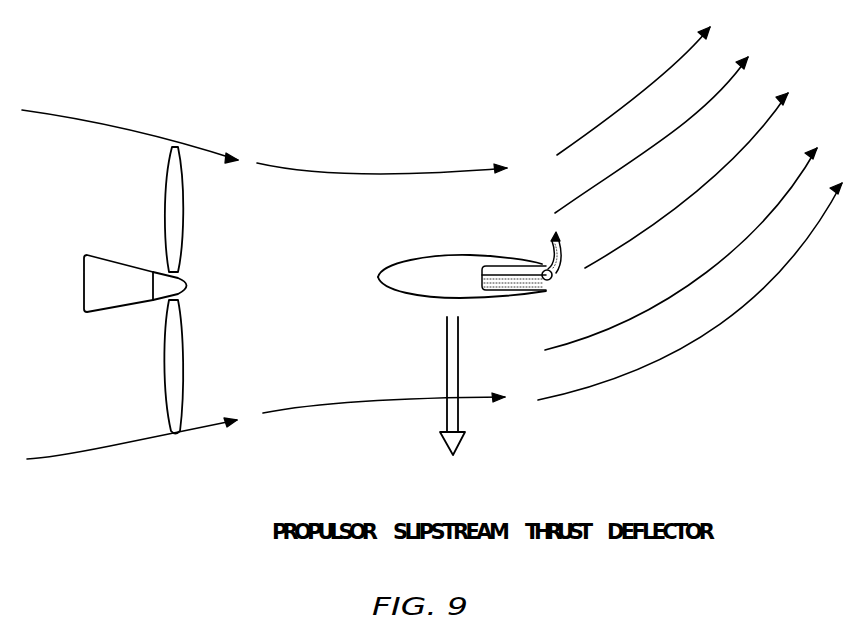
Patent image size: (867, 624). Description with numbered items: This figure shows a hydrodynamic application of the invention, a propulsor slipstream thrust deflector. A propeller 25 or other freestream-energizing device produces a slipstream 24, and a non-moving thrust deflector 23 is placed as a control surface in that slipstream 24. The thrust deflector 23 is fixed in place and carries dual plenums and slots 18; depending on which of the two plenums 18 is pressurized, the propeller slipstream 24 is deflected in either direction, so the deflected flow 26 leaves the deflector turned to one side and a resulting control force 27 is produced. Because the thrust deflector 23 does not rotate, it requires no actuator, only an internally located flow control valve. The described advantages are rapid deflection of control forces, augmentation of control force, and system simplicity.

The plenum and slot 18 is at (548, 282).
The thrust deflector 23 is at (432, 256).
The propeller slipstream 24 is at (330, 173).
The propulsor (propeller and spinner) 25 is at (143, 302).
The deflected slipstream flow 26 is at (760, 283).
The deflected thrust vector 27 is at (458, 420).